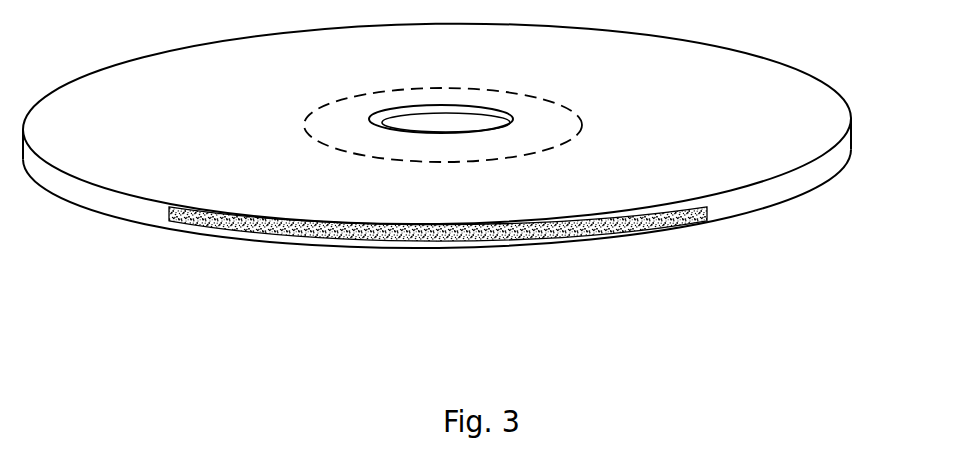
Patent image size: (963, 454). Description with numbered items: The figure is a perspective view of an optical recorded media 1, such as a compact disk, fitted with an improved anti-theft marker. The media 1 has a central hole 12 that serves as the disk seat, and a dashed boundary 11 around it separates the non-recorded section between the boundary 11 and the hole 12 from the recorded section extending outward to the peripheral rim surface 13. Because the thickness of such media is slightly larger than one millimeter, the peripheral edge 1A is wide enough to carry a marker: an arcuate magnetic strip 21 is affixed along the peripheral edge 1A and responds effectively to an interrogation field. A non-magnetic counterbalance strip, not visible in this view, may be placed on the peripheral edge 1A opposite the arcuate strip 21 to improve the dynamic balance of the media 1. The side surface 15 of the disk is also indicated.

The media 1 is at (469, 147).
The peripheral edge 1A is at (825, 185).
The boundary of recorded section 11 is at (580, 128).
The central hole 12 is at (507, 110).
The peripheral rim surface 13 is at (818, 78).
The disc side surface 15 is at (846, 152).
The magnetic strip 21 is at (708, 221).